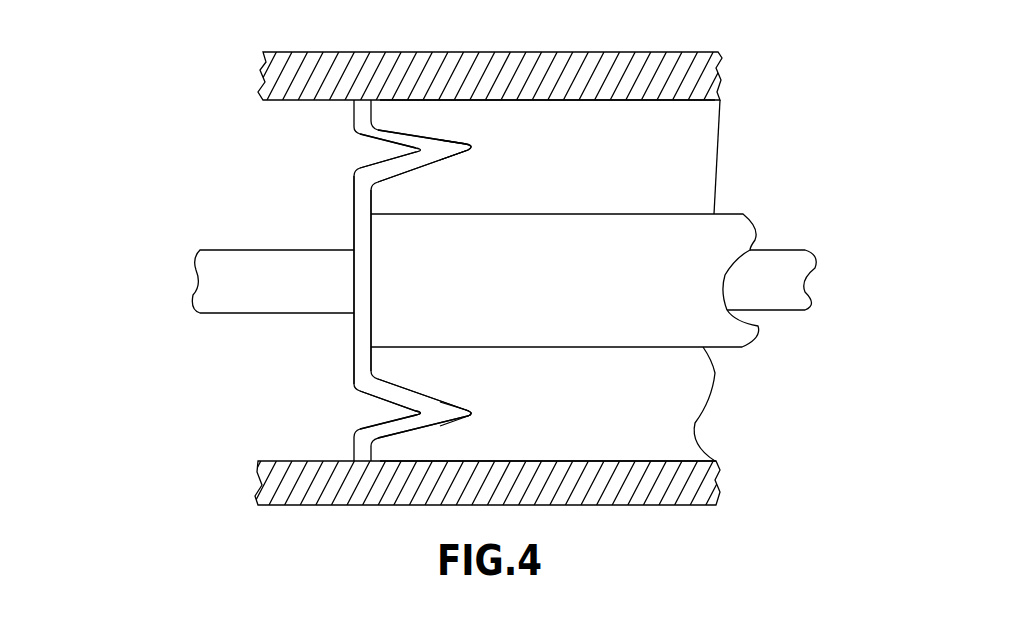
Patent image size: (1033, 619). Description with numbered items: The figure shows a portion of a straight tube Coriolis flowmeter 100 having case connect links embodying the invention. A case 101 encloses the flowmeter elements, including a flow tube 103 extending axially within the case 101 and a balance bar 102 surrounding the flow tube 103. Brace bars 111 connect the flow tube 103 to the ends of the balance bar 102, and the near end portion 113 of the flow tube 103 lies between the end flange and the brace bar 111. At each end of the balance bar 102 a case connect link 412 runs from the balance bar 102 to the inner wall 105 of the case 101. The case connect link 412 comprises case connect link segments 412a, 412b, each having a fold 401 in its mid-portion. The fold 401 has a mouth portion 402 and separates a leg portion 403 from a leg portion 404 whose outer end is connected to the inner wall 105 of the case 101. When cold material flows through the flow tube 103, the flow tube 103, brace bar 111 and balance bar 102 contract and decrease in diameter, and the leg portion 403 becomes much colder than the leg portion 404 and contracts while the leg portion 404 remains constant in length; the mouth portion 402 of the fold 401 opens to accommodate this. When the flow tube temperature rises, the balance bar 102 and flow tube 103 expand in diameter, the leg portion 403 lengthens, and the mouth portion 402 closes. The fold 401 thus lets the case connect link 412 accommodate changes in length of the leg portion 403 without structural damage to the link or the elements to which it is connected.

The straight tube Coriolis flowmeter 100 is at (192, 95).
The case 101 is at (562, 52).
The balance bar 102 is at (598, 275).
The flow tube 103 is at (790, 297).
The inner wall of case 105 is at (547, 100).
The brace bar 111 is at (365, 268).
The near end portion of flow tube 113 is at (247, 265).
The fold 401 is at (472, 147).
The mouth portion 402 is at (348, 418).
The leg portion 403 is at (372, 195).
The leg portion 404 is at (375, 111).
The case connect link 412 is at (333, 192).
The case connect link segment 412a is at (353, 227).
The case connect link segment 412b is at (353, 381).